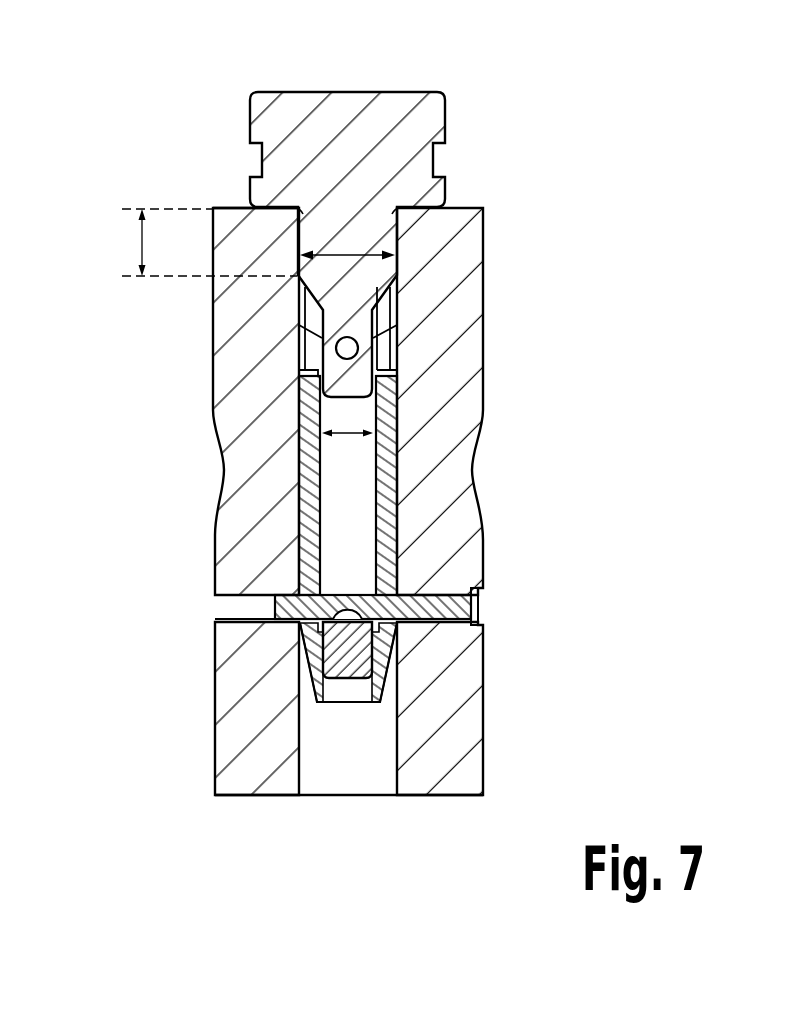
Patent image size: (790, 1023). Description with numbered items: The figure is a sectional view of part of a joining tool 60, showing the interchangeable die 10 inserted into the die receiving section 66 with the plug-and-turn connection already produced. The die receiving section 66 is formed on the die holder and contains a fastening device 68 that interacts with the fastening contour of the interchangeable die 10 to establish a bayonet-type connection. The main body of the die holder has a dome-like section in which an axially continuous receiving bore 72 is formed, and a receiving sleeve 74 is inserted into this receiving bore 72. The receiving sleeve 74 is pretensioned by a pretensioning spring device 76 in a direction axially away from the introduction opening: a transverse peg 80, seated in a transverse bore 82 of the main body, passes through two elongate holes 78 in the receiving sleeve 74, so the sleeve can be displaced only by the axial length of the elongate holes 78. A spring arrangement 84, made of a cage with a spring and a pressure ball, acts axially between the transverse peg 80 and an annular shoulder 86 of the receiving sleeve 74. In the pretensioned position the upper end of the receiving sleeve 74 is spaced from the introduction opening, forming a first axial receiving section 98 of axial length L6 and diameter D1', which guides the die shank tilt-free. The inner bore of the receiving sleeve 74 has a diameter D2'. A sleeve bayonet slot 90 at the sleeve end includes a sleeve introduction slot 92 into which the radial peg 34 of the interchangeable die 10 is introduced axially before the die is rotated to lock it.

The interchangeable die 10 is at (357, 120).
The joining tool 60 is at (528, 97).
The die receiving section 66 is at (443, 258).
The fastening device 68 is at (445, 335).
The first axial receiving section 98 is at (283, 256).
The axial length L6 is at (142, 243).
The diameter D1' is at (418, 211).
The diameter D2' is at (236, 419).
The sleeve bayonet slot 90 is at (308, 348).
The sleeve introduction slot 92 is at (385, 318).
The radial peg 34 is at (358, 348).
The receiving sleeve 74 is at (310, 530).
The pretensioning spring device 76 is at (520, 558).
The transverse peg 80 is at (478, 606).
The transverse bore 82 is at (240, 607).
The elongate holes 78 is at (302, 650).
The annular shoulder 86 is at (390, 650).
The spring arrangement 84 is at (343, 665).
The receiving bore 72 is at (372, 766).